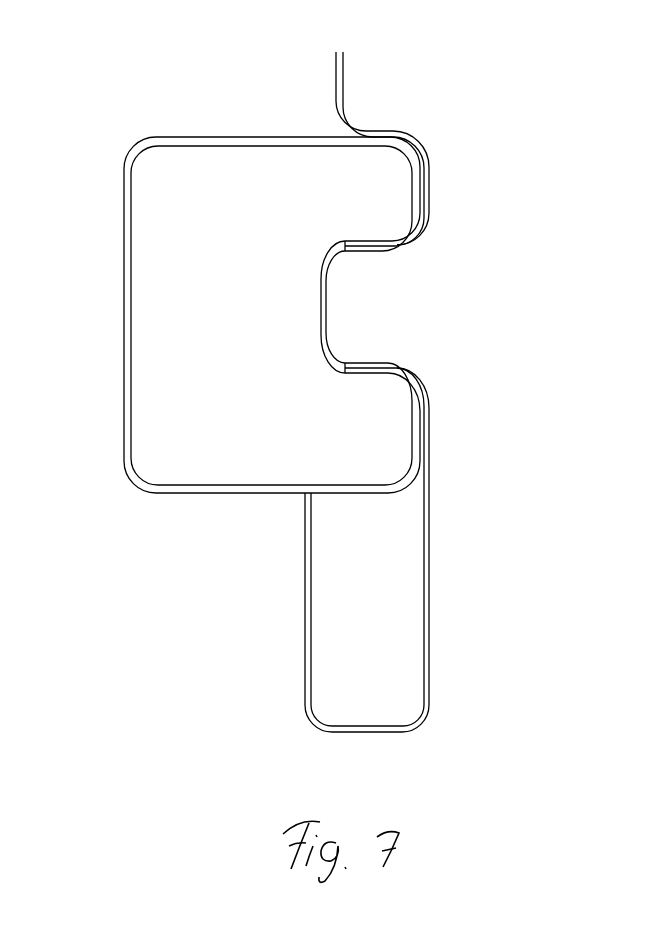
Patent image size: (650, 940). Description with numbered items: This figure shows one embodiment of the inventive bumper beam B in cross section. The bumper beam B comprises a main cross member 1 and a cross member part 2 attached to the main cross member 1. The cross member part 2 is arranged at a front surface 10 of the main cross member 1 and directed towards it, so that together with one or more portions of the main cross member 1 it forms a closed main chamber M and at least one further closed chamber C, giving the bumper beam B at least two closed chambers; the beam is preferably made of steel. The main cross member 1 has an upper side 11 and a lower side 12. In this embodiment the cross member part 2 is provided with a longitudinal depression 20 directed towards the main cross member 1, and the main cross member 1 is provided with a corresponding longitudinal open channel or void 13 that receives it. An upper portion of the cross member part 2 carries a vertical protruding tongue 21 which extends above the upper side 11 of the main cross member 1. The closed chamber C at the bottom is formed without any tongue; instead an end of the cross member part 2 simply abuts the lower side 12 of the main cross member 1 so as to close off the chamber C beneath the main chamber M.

The main cross member 1 is at (161, 497).
The upper side 11 is at (266, 137).
The lower side 12 is at (259, 497).
The longitudinal open channel or void 13 is at (297, 306).
The longitudinal depression 20 is at (328, 316).
The cross member part 2 is at (407, 392).
The vertical protruding tongue 21 is at (345, 80).
The front surface 10 is at (421, 422).
The bumper beam B is at (124, 72).
The closed main chamber M is at (241, 357).
The closed chamber C is at (369, 638).